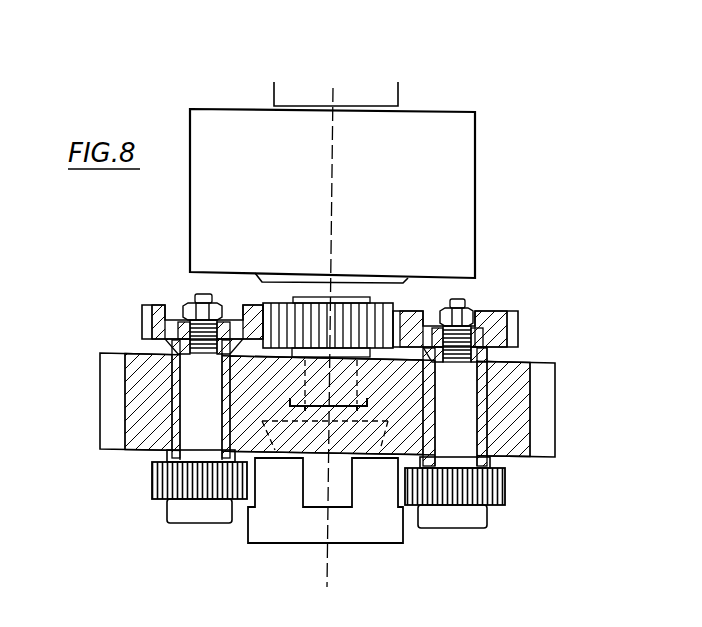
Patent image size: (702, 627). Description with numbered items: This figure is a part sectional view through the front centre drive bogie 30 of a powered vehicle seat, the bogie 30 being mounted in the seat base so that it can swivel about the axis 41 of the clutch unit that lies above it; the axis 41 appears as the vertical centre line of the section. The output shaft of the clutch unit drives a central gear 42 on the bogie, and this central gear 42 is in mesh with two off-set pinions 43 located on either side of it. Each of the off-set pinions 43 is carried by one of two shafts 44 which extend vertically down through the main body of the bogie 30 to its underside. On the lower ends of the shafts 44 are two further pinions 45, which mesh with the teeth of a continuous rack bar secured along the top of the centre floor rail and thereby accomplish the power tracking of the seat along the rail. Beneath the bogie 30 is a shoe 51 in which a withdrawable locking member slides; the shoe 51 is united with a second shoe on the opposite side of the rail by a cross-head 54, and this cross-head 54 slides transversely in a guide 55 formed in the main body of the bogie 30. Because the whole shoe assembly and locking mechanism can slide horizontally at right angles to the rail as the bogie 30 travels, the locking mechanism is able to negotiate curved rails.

The front centre drive bogie 30 is at (135, 432).
The axis 41 is at (328, 573).
The central gear 42 is at (382, 322).
The off-set pinions 43 is at (160, 312).
The shafts 44 is at (195, 428).
The further pinions 45 is at (192, 492).
The shoe 51 is at (303, 532).
The cross-head 54 is at (383, 442).
The guide 55 is at (387, 432).